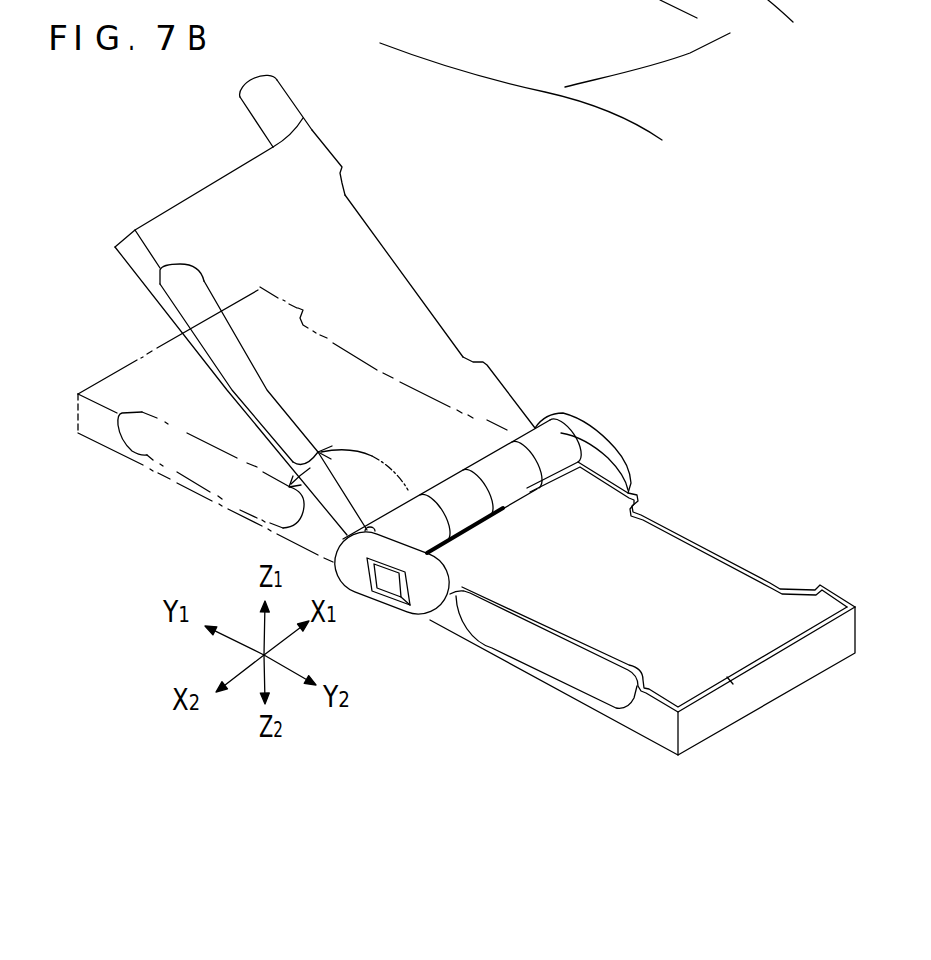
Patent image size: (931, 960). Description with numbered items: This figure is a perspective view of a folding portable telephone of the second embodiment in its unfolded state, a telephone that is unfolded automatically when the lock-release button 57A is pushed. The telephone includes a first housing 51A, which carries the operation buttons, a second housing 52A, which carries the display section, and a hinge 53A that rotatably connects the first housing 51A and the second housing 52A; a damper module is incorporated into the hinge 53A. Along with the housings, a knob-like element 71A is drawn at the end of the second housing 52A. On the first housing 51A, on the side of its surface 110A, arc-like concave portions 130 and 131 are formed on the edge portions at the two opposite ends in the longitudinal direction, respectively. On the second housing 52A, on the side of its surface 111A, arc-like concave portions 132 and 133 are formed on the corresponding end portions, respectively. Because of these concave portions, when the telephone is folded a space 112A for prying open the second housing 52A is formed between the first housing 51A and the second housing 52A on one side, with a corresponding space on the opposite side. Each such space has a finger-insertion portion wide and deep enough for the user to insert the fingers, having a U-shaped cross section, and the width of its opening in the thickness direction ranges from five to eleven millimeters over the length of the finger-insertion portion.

The first housing 51A is at (770, 690).
The second housing 52A is at (212, 198).
The hinge 53A is at (447, 487).
The lock-release button 57A is at (397, 588).
The antenna knob 71A is at (275, 108).
The surface of the first housing 110A is at (652, 555).
The surface of the second housing 111A is at (363, 247).
The space for prying open the second housing 112A is at (586, 70).
The arc-like concave portion 130 is at (523, 642).
The arc-like concave portion 131 is at (727, 550).
The arc-like concave portion 132 is at (240, 375).
The arc-like concave portion 133 is at (420, 297).